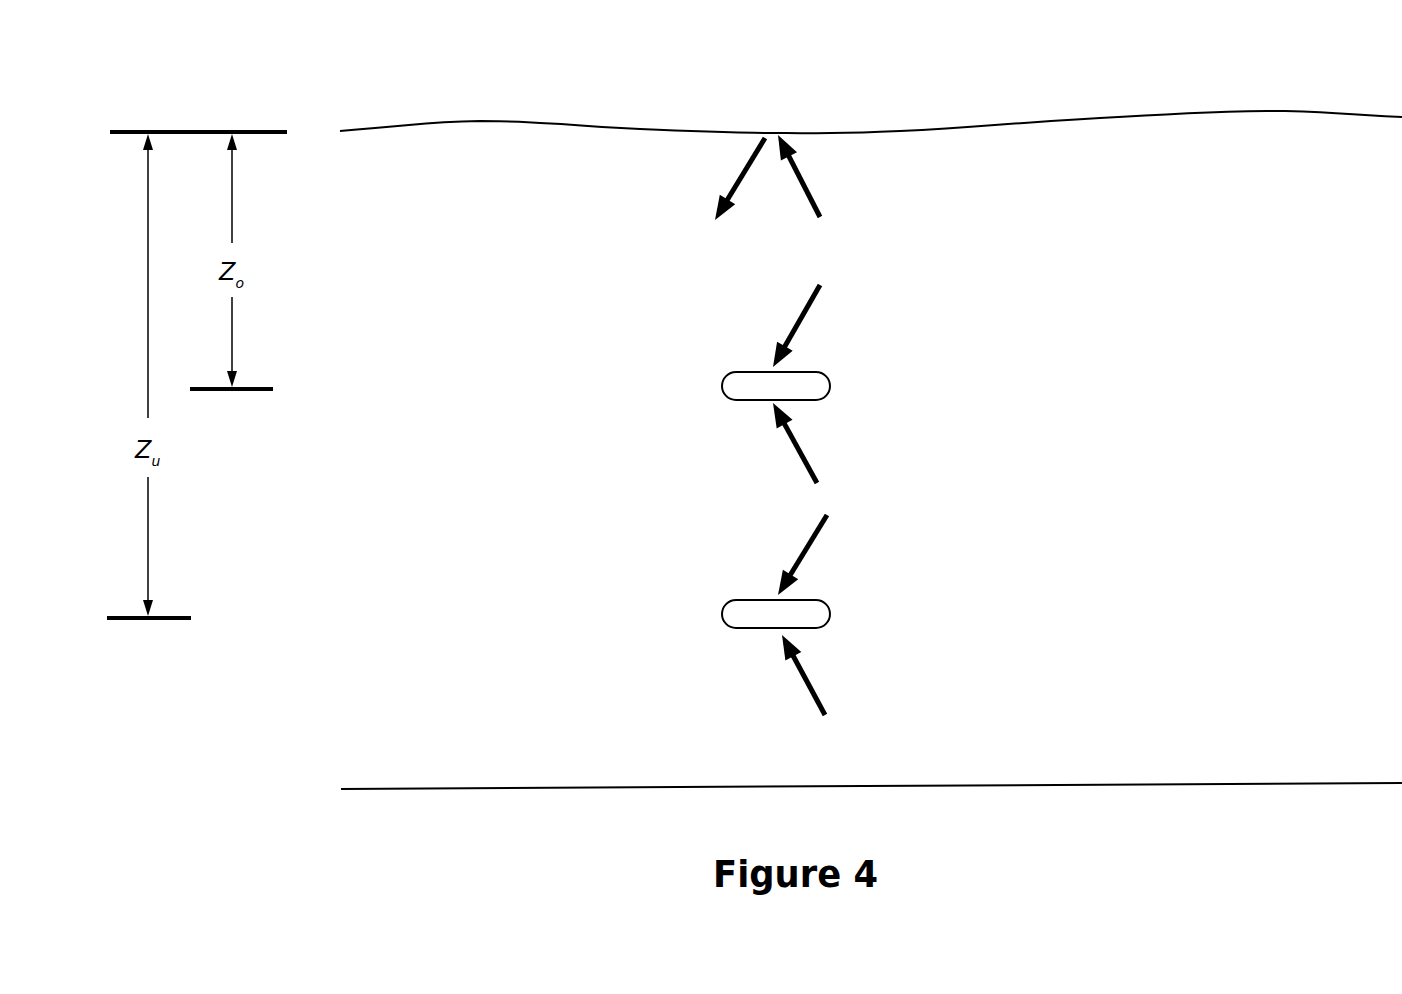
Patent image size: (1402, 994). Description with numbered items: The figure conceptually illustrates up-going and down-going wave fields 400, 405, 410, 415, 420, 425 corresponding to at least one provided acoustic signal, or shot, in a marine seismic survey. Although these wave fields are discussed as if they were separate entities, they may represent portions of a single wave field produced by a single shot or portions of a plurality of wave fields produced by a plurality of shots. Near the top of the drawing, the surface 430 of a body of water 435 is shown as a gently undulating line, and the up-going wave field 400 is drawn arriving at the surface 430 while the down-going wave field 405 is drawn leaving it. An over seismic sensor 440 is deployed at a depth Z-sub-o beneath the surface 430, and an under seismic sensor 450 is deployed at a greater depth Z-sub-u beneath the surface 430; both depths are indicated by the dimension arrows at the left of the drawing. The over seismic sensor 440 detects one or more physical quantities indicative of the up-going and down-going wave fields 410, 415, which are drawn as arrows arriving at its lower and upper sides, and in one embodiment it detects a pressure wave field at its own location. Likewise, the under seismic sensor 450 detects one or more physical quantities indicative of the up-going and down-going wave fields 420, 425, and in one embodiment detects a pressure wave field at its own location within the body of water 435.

The up-going wave field 400 is at (807, 183).
The down-going wave field 405 is at (747, 162).
The up-going wave field 410 is at (800, 447).
The down-going wave field 415 is at (800, 325).
The up-going wave field 420 is at (808, 677).
The down-going wave field 425 is at (805, 555).
The surface 430 is at (1167, 110).
The body of water 435 is at (1181, 365).
The over seismic sensor 440 is at (722, 386).
The under seismic sensor 450 is at (722, 613).